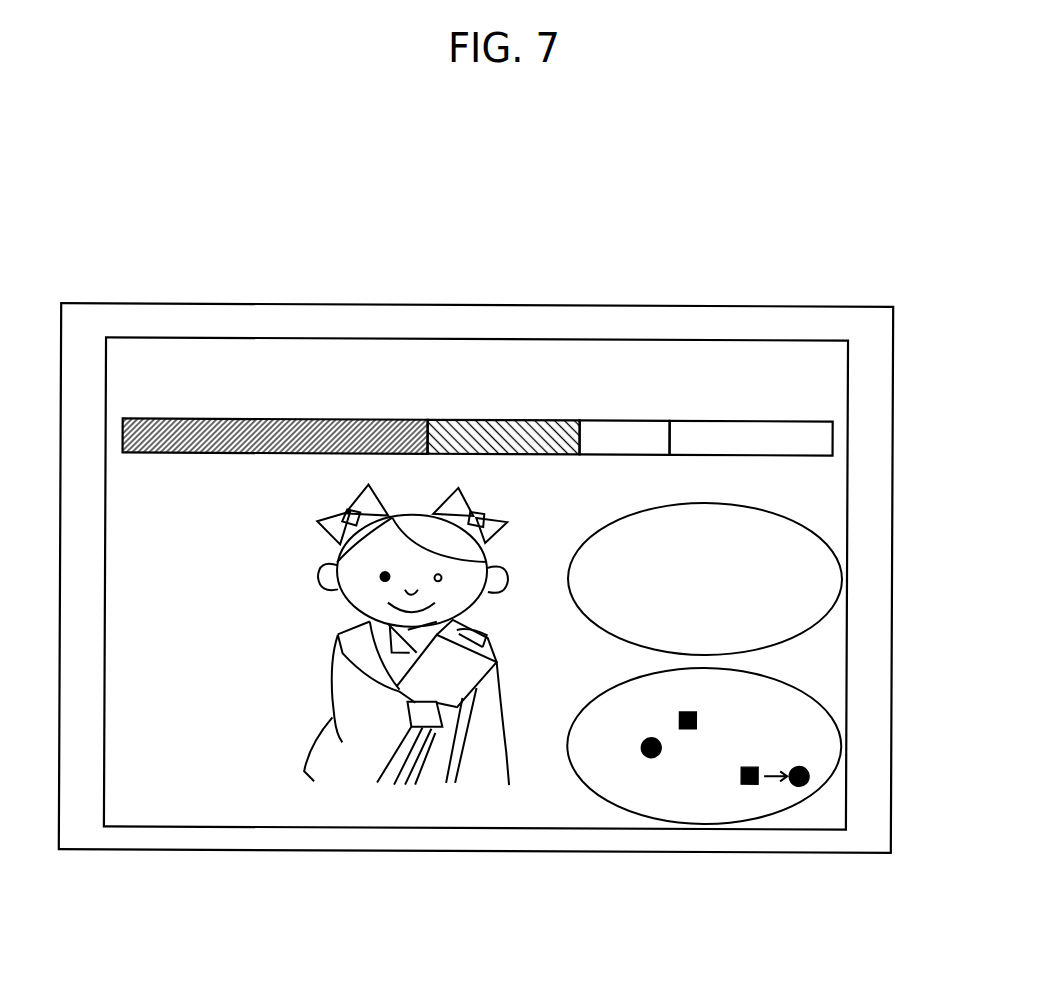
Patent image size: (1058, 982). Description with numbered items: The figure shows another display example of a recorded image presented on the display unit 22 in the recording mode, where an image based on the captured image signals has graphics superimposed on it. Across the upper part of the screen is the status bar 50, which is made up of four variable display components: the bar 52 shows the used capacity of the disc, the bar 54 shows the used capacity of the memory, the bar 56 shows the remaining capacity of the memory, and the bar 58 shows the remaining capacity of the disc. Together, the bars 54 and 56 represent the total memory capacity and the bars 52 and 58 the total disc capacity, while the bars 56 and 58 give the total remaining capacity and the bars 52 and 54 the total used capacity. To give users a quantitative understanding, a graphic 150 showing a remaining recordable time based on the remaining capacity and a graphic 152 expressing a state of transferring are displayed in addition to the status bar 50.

The display unit 22 is at (696, 226).
The status bar 50 is at (845, 292).
The bar 52 is at (212, 440).
The bar 54 is at (530, 447).
The bar 56 is at (617, 442).
The bar 58 is at (753, 442).
The graphic 150 is at (828, 535).
The graphic 152 is at (827, 705).